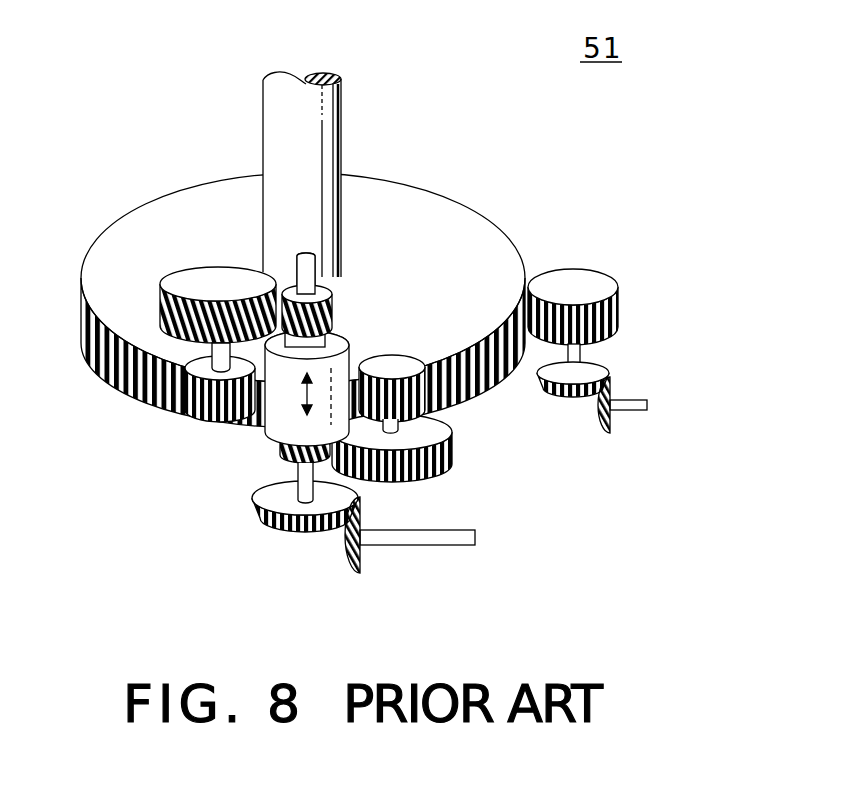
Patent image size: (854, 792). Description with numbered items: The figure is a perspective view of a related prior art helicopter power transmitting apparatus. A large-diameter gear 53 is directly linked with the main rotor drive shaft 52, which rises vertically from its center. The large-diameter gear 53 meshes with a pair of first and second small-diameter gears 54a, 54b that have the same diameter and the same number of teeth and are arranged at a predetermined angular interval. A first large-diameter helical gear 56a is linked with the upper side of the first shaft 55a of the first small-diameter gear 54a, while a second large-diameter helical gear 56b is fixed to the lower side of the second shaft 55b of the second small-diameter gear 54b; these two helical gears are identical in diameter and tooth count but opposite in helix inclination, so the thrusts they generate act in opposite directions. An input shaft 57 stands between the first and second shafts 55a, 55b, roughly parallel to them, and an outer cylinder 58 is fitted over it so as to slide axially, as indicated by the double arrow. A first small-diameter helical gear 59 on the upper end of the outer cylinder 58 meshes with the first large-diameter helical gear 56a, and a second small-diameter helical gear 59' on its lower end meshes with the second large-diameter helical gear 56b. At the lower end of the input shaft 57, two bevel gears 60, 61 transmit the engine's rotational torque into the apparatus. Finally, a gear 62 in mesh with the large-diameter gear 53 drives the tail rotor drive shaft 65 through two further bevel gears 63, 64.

The main rotor drive shaft 52 is at (320, 118).
The large-diameter gear 53 is at (428, 203).
The first small-diameter gear 54a is at (193, 418).
The second small-diameter gear 54b is at (430, 403).
The first shaft 55a is at (222, 358).
The second shaft 55b is at (452, 447).
The first large-diameter helical gear 56a is at (194, 286).
The second large-diameter helical gear 56b is at (413, 473).
The input shaft 57 is at (307, 490).
The outer cylinder 58 is at (350, 356).
The first small-diameter helical gear 59 is at (348, 286).
The second small-diameter helical gear 59' is at (251, 462).
The bevel gear 60 is at (307, 537).
The bevel gear 61 is at (363, 558).
The gear 62 is at (585, 280).
The bevel gear 63 is at (594, 371).
The bevel gear 64 is at (602, 432).
The tail rotor drive shaft 65 is at (637, 400).